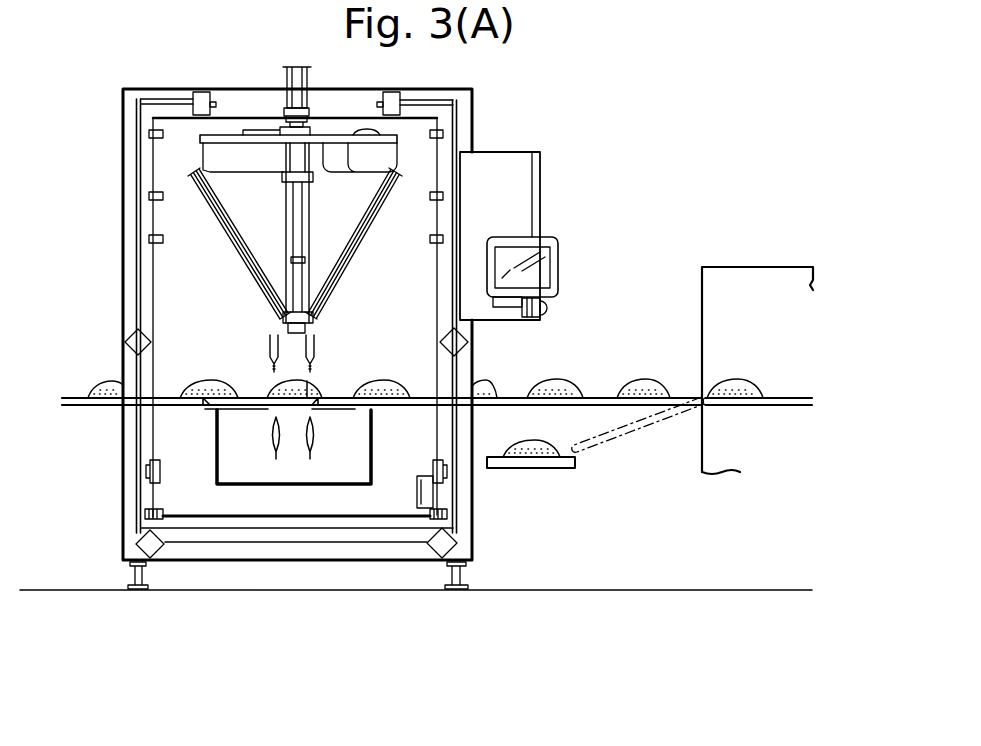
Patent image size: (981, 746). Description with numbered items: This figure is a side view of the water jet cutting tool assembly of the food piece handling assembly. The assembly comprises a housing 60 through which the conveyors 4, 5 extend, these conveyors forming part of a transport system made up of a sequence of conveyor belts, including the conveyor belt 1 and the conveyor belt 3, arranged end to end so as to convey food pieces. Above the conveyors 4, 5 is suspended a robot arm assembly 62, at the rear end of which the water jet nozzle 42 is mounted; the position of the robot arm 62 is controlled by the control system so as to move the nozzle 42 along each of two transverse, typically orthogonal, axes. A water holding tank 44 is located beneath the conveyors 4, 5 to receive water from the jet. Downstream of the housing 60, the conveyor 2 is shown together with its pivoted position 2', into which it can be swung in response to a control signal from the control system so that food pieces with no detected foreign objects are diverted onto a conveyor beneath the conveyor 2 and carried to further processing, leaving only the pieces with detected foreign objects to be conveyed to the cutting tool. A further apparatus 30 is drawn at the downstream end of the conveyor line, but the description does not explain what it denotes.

The conveyor belt 1 is at (792, 397).
The conveyor 2 is at (425, 349).
The pivoted position of conveyor 2' is at (638, 446).
The conveyor belt 3 is at (500, 407).
The conveyor belt 4 is at (407, 407).
The conveyor belt 5 is at (185, 405).
The downstream machine 30 is at (767, 267).
The water jet nozzle 42 is at (313, 347).
The water holding tank 44 is at (283, 485).
The housing 60 is at (463, 127).
The robot arm assembly 62 is at (222, 228).